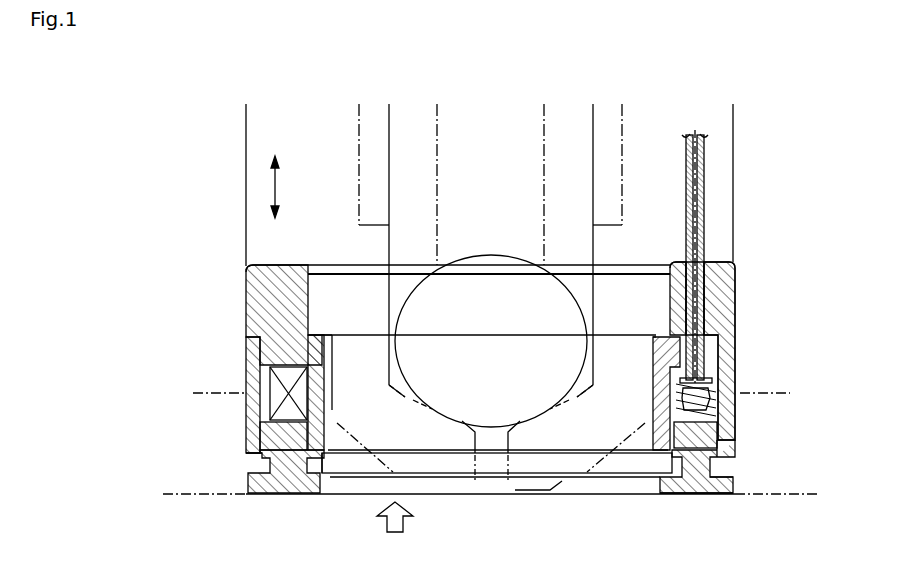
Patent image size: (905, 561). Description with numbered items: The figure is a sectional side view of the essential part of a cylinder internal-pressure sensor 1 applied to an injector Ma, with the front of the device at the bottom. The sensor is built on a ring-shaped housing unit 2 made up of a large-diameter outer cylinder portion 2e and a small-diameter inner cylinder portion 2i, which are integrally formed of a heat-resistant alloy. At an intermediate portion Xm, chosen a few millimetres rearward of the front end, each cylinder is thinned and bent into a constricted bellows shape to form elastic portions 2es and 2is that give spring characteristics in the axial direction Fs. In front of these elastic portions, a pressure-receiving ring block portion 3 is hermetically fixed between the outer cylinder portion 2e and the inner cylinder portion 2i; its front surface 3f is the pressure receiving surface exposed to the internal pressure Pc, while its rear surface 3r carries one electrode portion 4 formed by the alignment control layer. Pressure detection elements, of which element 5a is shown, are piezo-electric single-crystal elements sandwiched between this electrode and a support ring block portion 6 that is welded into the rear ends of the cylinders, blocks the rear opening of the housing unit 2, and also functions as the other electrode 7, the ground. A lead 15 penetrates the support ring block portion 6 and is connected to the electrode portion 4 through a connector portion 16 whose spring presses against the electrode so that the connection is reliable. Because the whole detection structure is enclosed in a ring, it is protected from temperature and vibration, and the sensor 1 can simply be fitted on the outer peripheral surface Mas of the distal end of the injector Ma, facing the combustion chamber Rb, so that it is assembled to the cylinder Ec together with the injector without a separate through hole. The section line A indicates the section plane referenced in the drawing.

The cylinder internal-pressure sensor 1 is at (748, 282).
The housing unit 2 is at (742, 348).
The outer cylinder portion 2e is at (248, 382).
The elastic portion of the outer cylinder portion 2es is at (233, 462).
The inner cylinder portion 2i is at (652, 360).
The elastic portion of the inner cylinder portion 2is is at (323, 463).
The pressure-receiving ring block portion 3 is at (262, 440).
The front surface of the pressure-receiving ring block portion 3f is at (688, 496).
The rear surface of the pressure-receiving ring block portion 3r is at (710, 418).
The one electrode portion 4 is at (330, 406).
The pressure detection element 5a is at (248, 368).
The support ring block portion 6 is at (246, 293).
The other electrode 7 is at (262, 268).
The lead 15 is at (704, 176).
The connector portion 16 is at (722, 390).
The section line A is at (489, 394).
The injector Ma is at (243, 148).
The outer peripheral surface of the distal end portion of the injector Mas is at (562, 485).
The axial direction Fs is at (272, 197).
The cylinder Ec is at (188, 497).
The internal pressure Pc is at (405, 524).
The combustion chamber Rb is at (560, 548).
The intermediate portion Xm is at (738, 472).